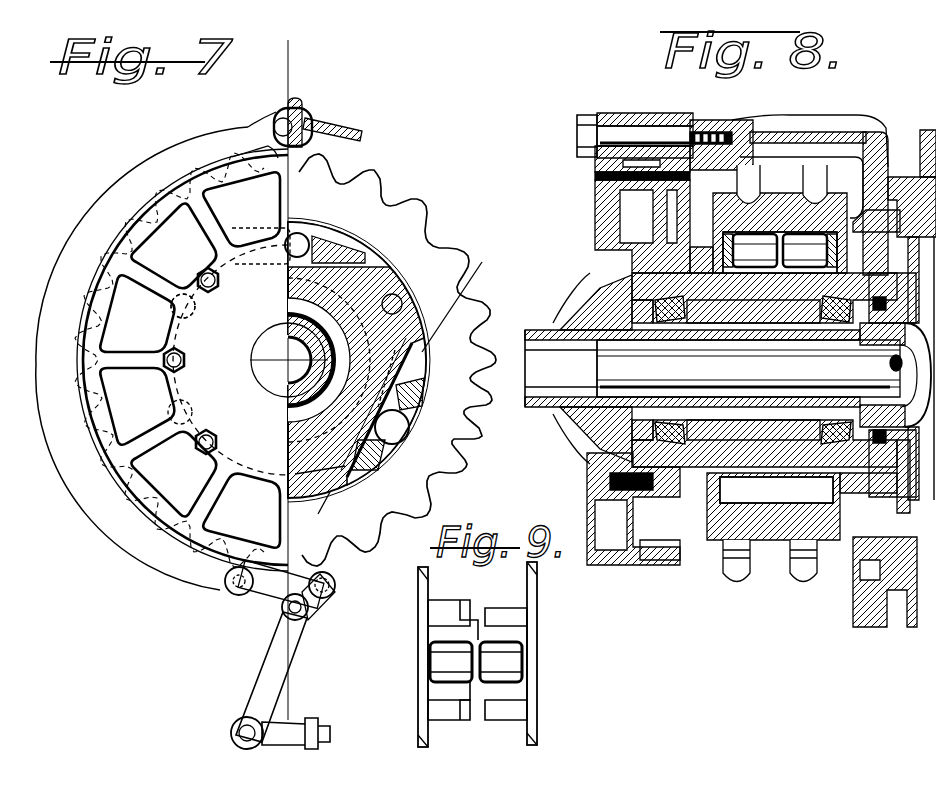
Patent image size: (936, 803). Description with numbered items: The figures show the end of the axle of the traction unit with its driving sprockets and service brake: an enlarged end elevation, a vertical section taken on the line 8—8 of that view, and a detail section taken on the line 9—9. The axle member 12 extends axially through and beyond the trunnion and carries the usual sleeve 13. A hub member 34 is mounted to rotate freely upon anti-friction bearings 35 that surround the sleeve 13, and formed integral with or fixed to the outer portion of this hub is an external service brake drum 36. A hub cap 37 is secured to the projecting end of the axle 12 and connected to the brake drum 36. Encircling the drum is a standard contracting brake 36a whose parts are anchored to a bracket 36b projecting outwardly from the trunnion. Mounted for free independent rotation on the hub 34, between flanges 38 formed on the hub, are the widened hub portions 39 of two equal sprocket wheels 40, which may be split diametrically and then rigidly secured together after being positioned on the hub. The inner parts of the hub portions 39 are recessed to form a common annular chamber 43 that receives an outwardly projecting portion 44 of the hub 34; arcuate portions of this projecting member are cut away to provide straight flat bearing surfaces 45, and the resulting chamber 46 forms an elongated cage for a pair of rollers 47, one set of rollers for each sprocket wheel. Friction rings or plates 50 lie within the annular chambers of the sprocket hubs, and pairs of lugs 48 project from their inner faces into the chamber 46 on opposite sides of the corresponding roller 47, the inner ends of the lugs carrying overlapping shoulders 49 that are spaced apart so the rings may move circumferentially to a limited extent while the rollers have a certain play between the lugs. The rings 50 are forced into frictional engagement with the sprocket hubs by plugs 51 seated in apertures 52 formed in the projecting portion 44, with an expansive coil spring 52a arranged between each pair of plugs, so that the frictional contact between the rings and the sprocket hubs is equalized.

In FIG. 7, the section line 8— 8 is at (297, 72).
In FIG. 7, the section line 9— 9 is at (399, 399).
In FIG. 7, the axle member 12 is at (288, 350).
In FIG. 8, the axle member 12 is at (728, 375).
In FIG. 7, the sleeve 13 is at (288, 360).
In FIG. 8, the sleeve 13 is at (658, 368).
In FIG. 8, the hub member 34 is at (753, 314).
In FIG. 8, the anti-friction bearings 35 is at (560, 474).
In FIG. 7, the service brake drum 36 is at (100, 512).
In FIG. 8, the service brake drum 36 is at (640, 184).
In FIG. 7, the contracting brake 36a is at (178, 162).
In FIG. 8, the contracting brake 36a is at (645, 122).
In FIG. 8, the bracket 36b is at (722, 124).
In FIG. 7, the hub cap 37 is at (270, 377).
In FIG. 8, the hub cap 37 is at (566, 330).
In FIG. 8, the flanges 38 is at (704, 242).
In FIG. 7, the hub portions of sprocket wheels 39 is at (352, 466).
In FIG. 8, the hub portions of sprocket wheels 39 is at (885, 140).
In FIG. 7, the sprocket wheels 40 is at (405, 243).
In FIG. 8, the sprocket wheels 40 is at (814, 180).
In FIG. 7, the annular chamber 43 is at (352, 250).
In FIG. 7, the projecting portion of hub 44 is at (300, 284).
In FIG. 7, the flat bearing surfaces 45 is at (476, 342).
In FIG. 7, the chamber 46 is at (340, 240).
In FIG. 7, the rollers 47 is at (290, 240).
In FIG. 9, the rollers 47 is at (445, 663).
In FIG. 8, the rollers 47 is at (725, 252).
In FIG. 7, the lugs 48 is at (316, 230).
In FIG. 9, the lugs 48 is at (440, 640).
In FIG. 9, the overlapping shoulders 49 is at (476, 625).
In FIG. 9, the friction rings 50 is at (420, 588).
In FIG. 8, the friction rings 50 is at (842, 493).
In FIG. 8, the plugs 51 is at (745, 470).
In FIG. 7, the apertures 52 is at (400, 306).
In FIG. 8, the apertures 52 is at (776, 545).
In FIG. 8, the expansive coil spring 52a is at (790, 470).